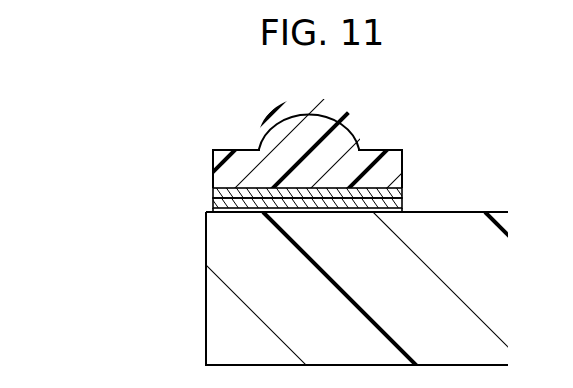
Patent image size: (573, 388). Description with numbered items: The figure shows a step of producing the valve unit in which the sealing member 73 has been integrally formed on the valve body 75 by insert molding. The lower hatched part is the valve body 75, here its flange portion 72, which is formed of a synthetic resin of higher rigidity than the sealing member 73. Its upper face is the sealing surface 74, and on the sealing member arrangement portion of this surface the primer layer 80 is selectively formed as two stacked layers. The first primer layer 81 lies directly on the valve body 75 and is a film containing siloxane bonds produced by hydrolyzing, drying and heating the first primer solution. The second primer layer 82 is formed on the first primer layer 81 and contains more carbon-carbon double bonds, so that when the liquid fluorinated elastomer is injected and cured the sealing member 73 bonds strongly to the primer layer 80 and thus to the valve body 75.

The sealing member 73 is at (258, 130).
The sealing surface 74 is at (458, 211).
The valve body 75 is at (294, 295).
The flange portion 72 is at (215, 295).
The primer layer 80 is at (223, 200).
The first primer layer 81 is at (213, 204).
The second primer layer 82 is at (213, 193).